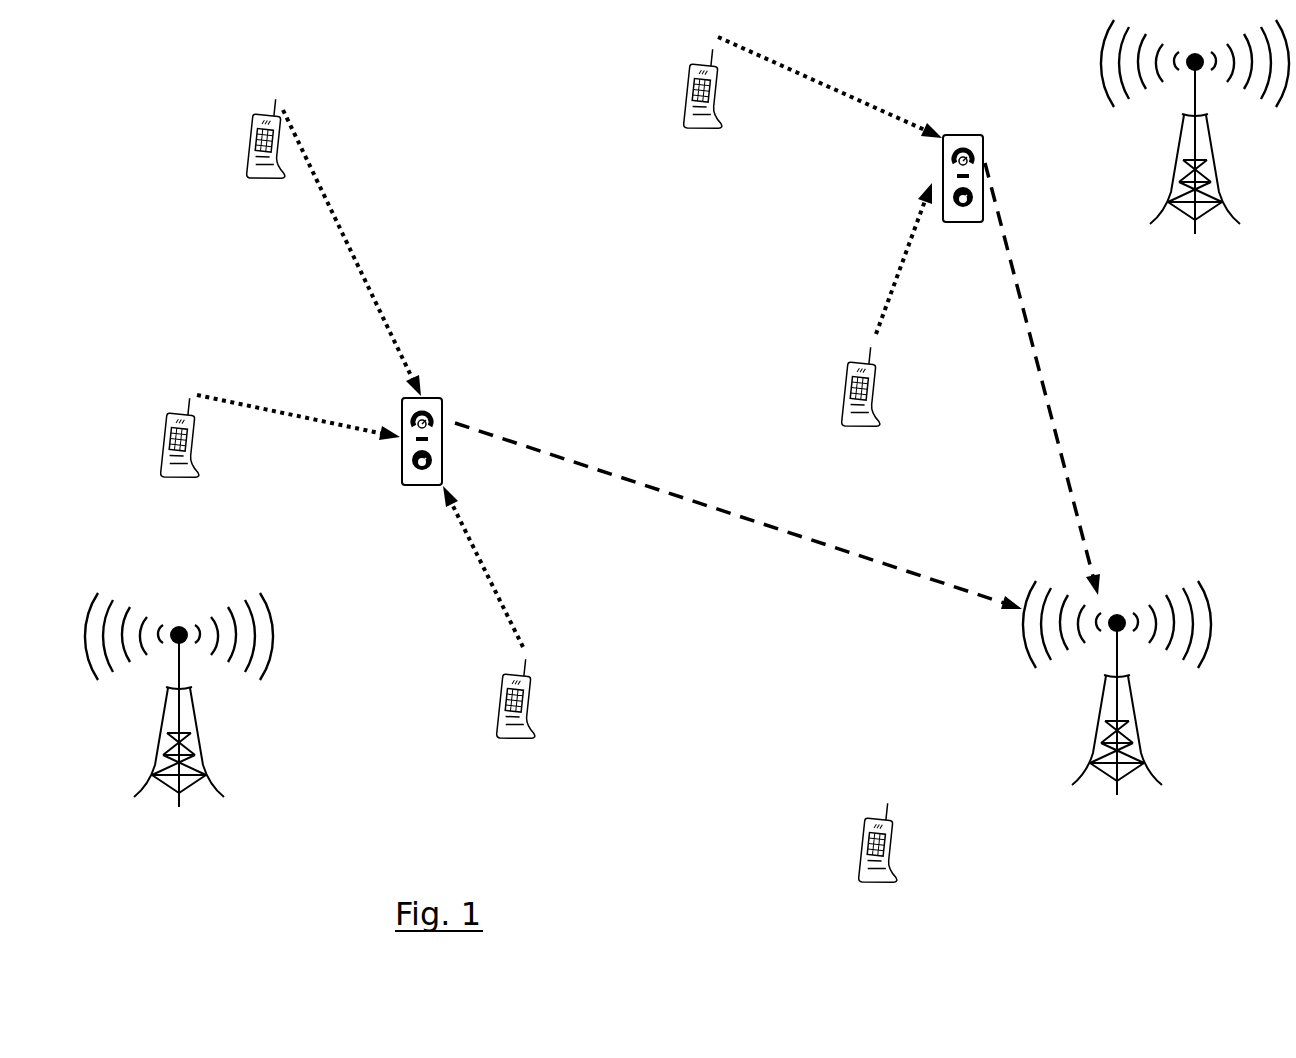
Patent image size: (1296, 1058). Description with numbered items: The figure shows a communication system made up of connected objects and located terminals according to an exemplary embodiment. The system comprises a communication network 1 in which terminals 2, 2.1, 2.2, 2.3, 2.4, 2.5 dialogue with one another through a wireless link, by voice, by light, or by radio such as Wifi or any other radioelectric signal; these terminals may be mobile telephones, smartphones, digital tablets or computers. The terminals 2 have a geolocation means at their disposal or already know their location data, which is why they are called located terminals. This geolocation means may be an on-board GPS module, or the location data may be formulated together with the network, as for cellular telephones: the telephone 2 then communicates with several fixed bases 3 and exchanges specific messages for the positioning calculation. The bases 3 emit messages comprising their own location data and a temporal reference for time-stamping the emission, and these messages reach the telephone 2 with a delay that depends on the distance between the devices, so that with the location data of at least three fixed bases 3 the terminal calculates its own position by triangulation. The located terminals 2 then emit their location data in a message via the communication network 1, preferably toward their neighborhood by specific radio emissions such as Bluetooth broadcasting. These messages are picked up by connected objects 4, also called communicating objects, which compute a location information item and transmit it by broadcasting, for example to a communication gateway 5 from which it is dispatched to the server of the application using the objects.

The communication network 1 is at (112, 90).
The terminal 2 is at (881, 861).
The terminal 2.1 is at (244, 159).
The terminal 2.2 is at (174, 459).
The terminal 2.3 is at (523, 717).
The terminal 2.4 is at (690, 108).
The terminal 2.5 is at (872, 406).
The fixed base 3 is at (687, 428).
The connected object 4 is at (689, 344).
The communication gateway 5 is at (1117, 702).